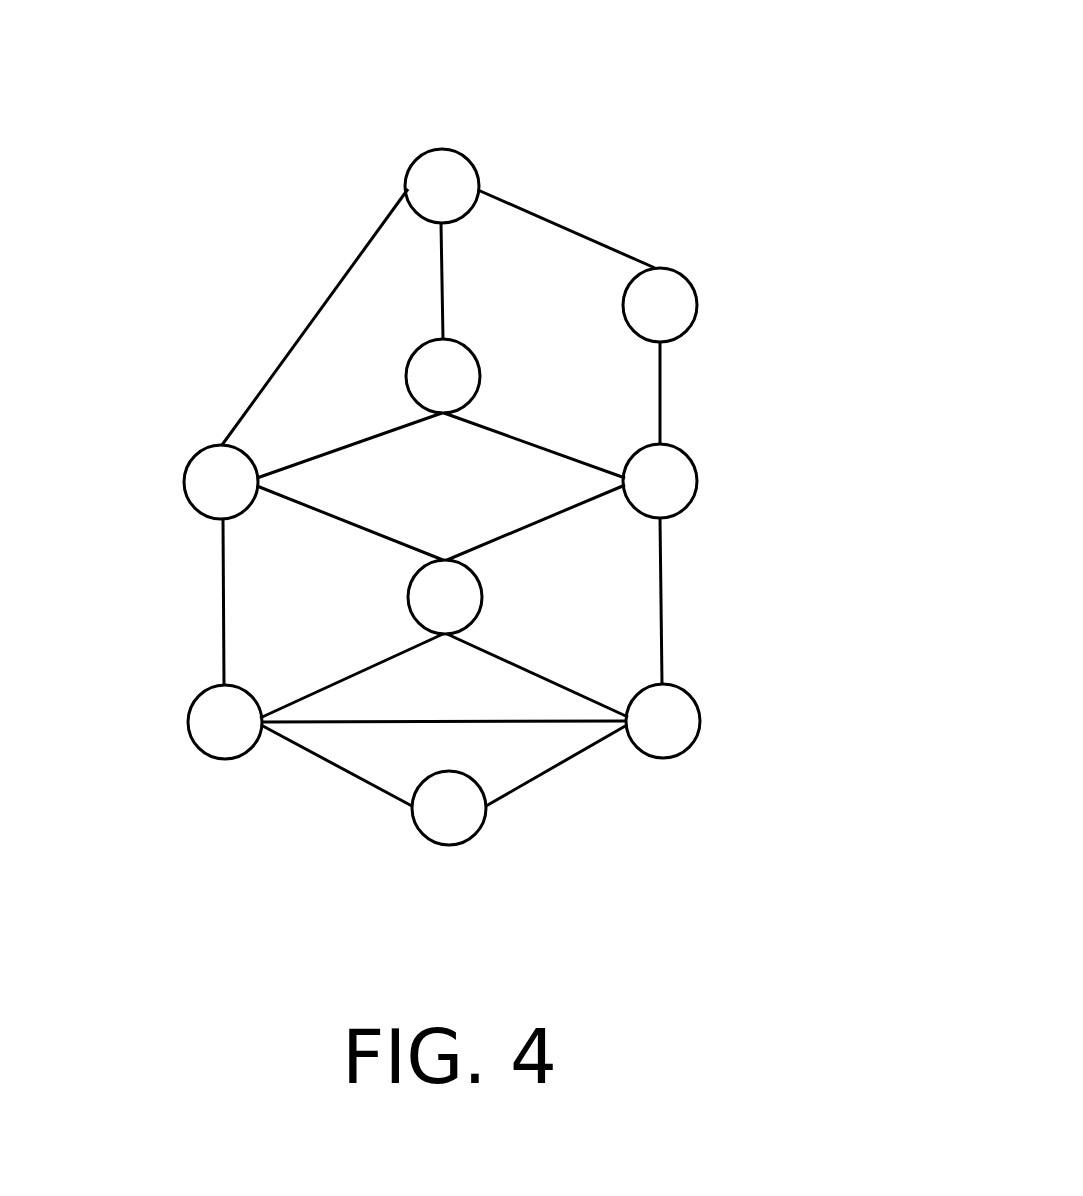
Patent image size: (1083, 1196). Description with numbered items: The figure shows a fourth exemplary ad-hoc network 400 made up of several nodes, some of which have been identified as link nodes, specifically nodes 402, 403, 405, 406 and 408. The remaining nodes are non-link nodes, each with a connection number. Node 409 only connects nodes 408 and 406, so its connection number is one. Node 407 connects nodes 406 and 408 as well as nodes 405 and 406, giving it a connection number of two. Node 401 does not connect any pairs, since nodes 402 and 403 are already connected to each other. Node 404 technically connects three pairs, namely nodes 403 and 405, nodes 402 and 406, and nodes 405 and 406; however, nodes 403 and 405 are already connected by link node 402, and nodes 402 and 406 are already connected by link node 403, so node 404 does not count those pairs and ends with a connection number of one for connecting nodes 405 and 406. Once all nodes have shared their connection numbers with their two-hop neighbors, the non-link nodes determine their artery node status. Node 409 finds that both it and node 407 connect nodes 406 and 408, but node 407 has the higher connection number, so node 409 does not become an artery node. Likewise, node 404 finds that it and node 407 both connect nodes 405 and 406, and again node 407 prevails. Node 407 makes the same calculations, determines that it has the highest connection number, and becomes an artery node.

The ad-hoc network 400 is at (807, 70).
The node 401 is at (500, 858).
The node 402 is at (149, 708).
The node 403 is at (721, 758).
The node 404 is at (500, 622).
The node 405 is at (207, 402).
The node 406 is at (723, 427).
The node 407 is at (491, 339).
The node 408 is at (494, 113).
The node 409 is at (697, 251).